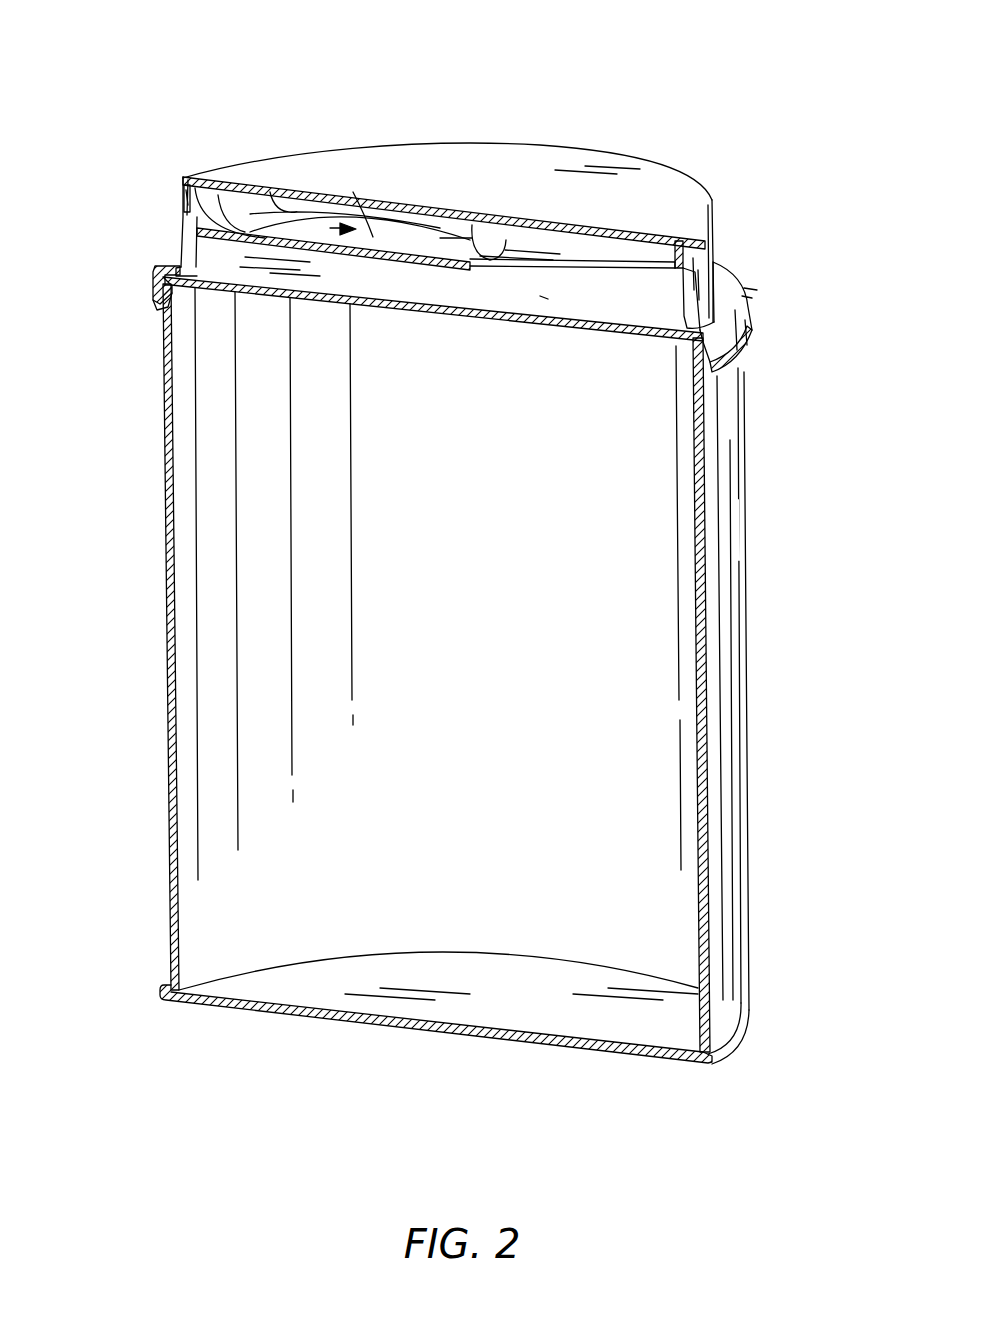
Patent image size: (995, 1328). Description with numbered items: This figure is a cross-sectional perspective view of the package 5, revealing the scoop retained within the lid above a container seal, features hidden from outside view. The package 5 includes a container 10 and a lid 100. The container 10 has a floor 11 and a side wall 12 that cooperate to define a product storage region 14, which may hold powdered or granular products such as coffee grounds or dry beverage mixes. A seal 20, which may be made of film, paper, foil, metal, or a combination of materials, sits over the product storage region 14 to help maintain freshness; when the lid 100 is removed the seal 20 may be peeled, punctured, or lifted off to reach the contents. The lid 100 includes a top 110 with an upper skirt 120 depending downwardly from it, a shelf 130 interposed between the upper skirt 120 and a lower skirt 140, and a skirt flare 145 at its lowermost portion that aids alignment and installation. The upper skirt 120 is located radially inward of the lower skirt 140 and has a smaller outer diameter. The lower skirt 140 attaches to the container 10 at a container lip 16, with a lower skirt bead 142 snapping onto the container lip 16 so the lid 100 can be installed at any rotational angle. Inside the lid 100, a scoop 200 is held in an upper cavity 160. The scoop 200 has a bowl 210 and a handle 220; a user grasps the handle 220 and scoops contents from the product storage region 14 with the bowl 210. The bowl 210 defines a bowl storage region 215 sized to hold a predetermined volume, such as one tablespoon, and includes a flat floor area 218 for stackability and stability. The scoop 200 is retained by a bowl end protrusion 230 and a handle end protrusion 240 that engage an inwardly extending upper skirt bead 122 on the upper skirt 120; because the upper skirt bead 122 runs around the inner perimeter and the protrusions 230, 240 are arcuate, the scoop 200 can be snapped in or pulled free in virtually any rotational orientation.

The package 5 is at (100, 88).
The container 10 is at (800, 706).
The floor 11 is at (545, 1040).
The side wall 12 is at (214, 795).
The product storage region 14 is at (440, 785).
The container lip 16 is at (175, 290).
The seal 20 is at (545, 303).
The lid 100 is at (752, 208).
The top 110 is at (620, 170).
The upper skirt 120 is at (697, 273).
The upper skirt bead 122 is at (183, 232).
The shelf 130 is at (170, 268).
The lower skirt 140 is at (747, 320).
The lower skirt bead 142 is at (158, 285).
The skirt flare 145 is at (750, 347).
The upper cavity 160 is at (525, 283).
The scoop 200 is at (478, 232).
The bowl 210 is at (395, 268).
The bowl storage region 215 is at (300, 245).
The flat floor area 218 is at (357, 240).
The handle 220 is at (466, 265).
The bowl end protrusion 230 is at (183, 200).
The handle end protrusion 240 is at (673, 257).